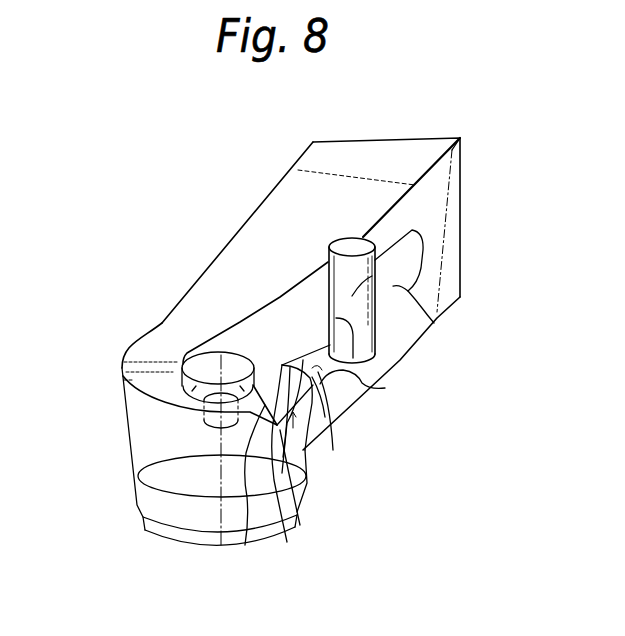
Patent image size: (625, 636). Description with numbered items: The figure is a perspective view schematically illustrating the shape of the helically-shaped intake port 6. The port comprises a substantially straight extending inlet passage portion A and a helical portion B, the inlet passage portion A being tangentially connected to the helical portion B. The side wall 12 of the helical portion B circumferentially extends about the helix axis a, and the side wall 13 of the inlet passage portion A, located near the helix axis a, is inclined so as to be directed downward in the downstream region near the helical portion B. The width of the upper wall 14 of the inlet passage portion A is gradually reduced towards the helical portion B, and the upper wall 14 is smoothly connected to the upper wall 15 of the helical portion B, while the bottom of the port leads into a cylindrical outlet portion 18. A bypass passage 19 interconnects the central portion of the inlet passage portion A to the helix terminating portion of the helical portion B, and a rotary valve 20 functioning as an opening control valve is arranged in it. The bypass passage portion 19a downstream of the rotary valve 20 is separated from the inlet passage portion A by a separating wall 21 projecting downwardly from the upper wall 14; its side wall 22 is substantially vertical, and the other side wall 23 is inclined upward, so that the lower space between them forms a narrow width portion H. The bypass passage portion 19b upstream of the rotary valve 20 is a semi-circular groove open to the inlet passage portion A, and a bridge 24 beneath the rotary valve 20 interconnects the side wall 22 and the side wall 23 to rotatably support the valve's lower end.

The inlet passage portion A is at (289, 162).
The helically-shaped intake port 6 is at (257, 189).
The upper wall of the inlet passage portion 14 is at (263, 237).
The inclined side wall 13 is at (268, 319).
The helical portion B is at (118, 350).
The upper wall of the helical portion 15 is at (125, 393).
The side wall of the helical portion 12 is at (137, 452).
The cylindrical outlet portion 18 is at (162, 526).
The separating wall 21 is at (220, 491).
The helix axis a is at (222, 552).
The rotary valve 20 is at (349, 236).
The bypass passage 19 is at (350, 393).
The bypass passage portion downstream of the rotary valve 19a is at (320, 387).
The bypass passage portion upstream of the rotary valve 19b is at (437, 318).
The bridge 24 is at (385, 388).
The side wall of the separating wall 22 is at (293, 494).
The other side wall of the bypass passage portion 23 is at (315, 447).
The narrow width portion H is at (313, 486).